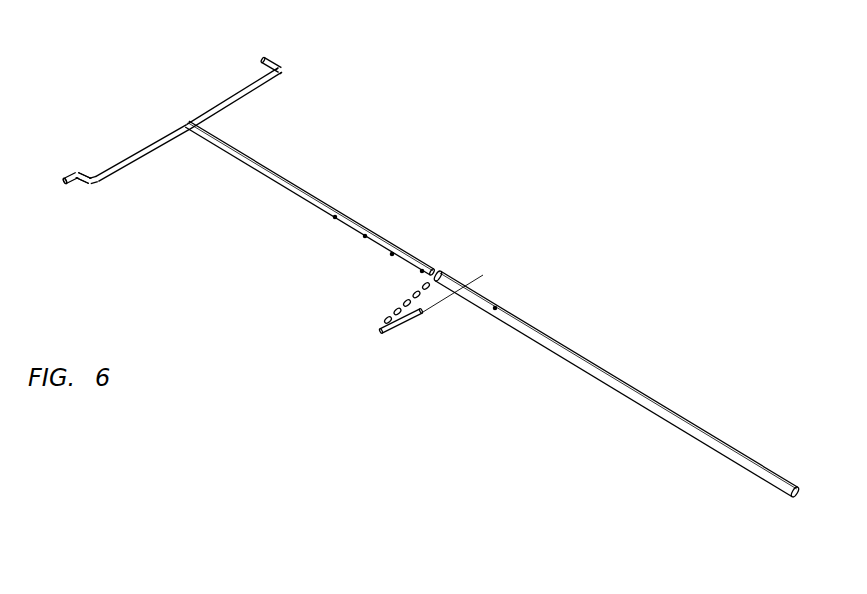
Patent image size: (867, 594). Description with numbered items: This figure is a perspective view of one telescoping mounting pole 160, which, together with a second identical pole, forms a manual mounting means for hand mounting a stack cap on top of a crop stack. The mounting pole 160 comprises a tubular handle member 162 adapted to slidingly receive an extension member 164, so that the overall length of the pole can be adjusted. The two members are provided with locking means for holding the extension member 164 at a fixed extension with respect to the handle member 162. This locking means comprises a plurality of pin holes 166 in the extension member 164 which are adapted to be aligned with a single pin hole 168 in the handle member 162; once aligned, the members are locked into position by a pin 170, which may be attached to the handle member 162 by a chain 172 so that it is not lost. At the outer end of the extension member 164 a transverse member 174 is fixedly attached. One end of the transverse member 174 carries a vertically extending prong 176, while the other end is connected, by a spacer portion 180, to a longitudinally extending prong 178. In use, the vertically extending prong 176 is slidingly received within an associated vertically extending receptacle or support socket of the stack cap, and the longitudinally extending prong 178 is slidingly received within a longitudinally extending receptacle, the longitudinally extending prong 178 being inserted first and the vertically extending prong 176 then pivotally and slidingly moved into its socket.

The telescoping mounting pole 160 is at (502, 213).
The tubular handle member 162 is at (653, 402).
The extension member 164 is at (303, 190).
The pin holes 166 is at (422, 272).
The pin hole 168 is at (462, 290).
The pin 170 is at (410, 328).
The chain 172 is at (414, 304).
The transverse member 174 is at (125, 153).
The vertically extending prong 176 is at (278, 64).
The longitudinally extending prong 178 is at (67, 170).
The spacer portion 180 is at (93, 178).